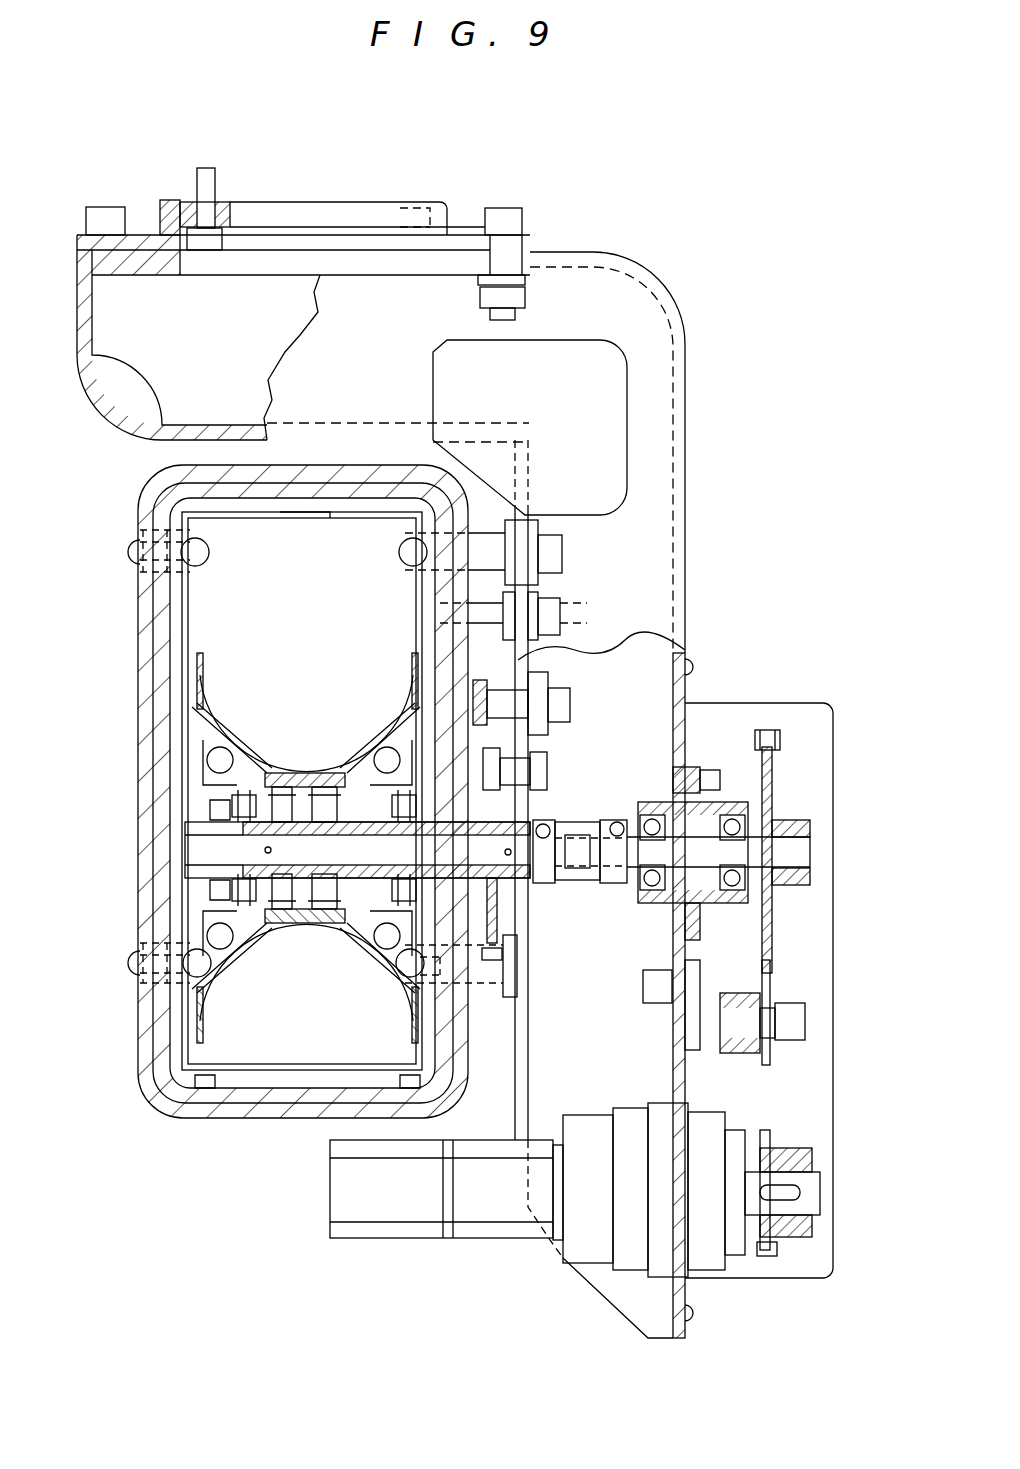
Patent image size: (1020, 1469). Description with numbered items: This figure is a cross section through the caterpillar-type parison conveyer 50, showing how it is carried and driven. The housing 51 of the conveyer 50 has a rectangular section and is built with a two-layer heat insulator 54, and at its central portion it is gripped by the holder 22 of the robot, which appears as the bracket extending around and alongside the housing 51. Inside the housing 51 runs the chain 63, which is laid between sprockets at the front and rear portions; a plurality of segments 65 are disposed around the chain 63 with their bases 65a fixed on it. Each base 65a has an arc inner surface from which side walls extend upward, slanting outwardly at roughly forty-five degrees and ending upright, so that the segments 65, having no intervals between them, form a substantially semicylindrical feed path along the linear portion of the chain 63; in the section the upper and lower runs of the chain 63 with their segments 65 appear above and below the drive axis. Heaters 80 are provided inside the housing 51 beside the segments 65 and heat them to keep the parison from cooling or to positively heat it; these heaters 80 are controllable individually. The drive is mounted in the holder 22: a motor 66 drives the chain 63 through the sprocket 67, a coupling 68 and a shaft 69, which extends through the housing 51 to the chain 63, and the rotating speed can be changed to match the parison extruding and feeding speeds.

The holder 22 is at (686, 514).
The conveyer 50 is at (72, 534).
The housing 51 is at (139, 645).
The two-layer heat insulator 54 is at (149, 697).
The chain 63 is at (353, 762).
The segments 65 is at (228, 720).
The bases of the segments 65a is at (300, 772).
The motor 66 is at (595, 1120).
The sprocket 67 is at (772, 775).
The coupling 68 is at (594, 820).
The shaft 69 is at (492, 858).
The heaters 80 is at (388, 748).